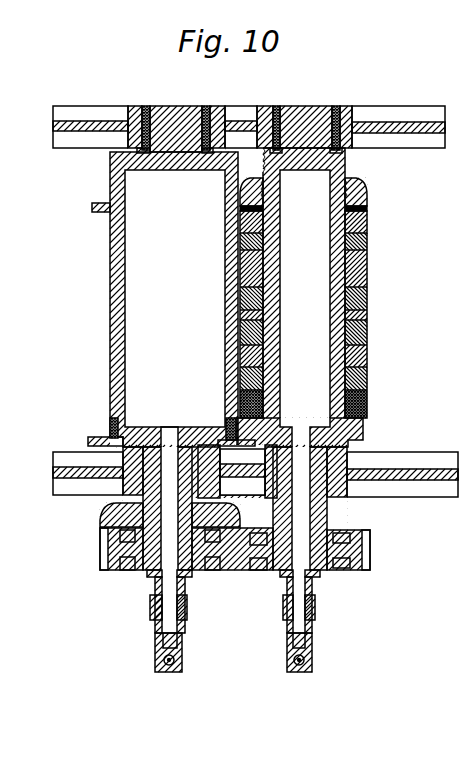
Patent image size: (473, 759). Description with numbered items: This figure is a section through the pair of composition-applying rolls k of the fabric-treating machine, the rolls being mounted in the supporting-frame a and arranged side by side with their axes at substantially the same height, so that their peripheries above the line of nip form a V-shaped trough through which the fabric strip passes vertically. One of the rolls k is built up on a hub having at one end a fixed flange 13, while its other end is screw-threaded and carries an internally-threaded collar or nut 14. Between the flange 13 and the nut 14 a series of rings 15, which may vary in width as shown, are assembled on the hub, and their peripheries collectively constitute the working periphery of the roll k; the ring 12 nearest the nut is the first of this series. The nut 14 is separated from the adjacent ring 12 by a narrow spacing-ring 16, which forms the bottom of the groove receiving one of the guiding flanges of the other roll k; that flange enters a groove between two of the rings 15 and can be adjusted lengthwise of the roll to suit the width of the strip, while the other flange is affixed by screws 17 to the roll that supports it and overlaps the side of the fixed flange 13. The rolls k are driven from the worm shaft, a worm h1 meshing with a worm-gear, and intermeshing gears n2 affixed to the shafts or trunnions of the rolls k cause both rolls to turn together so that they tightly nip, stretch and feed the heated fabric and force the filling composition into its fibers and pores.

The supporting-frame a is at (92, 121).
The worm h1 is at (64, 543).
The roll k is at (112, 340).
The screws 17 is at (110, 428).
The collar or nut 14 is at (360, 187).
The spacing-ring 16 is at (356, 208).
The packing ring 12 is at (367, 226).
The rings 15 is at (367, 242).
The flange 13 is at (363, 431).
The intermeshing gears n2 is at (390, 553).